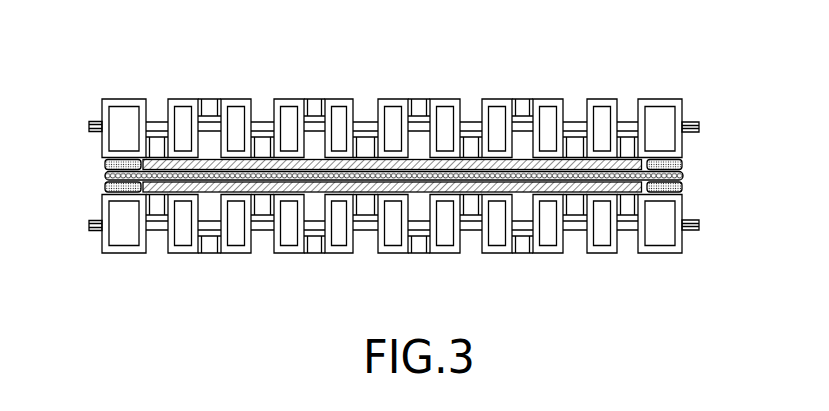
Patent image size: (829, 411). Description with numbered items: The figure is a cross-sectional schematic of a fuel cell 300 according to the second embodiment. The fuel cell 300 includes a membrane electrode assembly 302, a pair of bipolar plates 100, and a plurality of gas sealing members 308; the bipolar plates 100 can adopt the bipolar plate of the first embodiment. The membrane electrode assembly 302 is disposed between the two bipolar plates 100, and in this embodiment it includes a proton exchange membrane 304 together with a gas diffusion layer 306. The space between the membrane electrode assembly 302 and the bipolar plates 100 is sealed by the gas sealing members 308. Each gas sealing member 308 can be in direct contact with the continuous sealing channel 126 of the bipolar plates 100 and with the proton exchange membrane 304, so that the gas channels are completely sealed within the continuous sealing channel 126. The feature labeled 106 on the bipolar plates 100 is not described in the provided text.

The fuel cell 300 is at (147, 42).
The bipolar plate 100 is at (82, 100).
The continuous sealing channel 126 is at (662, 99).
The terminal 106 is at (700, 120).
The membrane electrode assembly 302 is at (423, 178).
The proton exchange membrane 304 is at (684, 176).
The gas diffusion layer 306 is at (630, 160).
The gas sealing member 308 is at (103, 190).